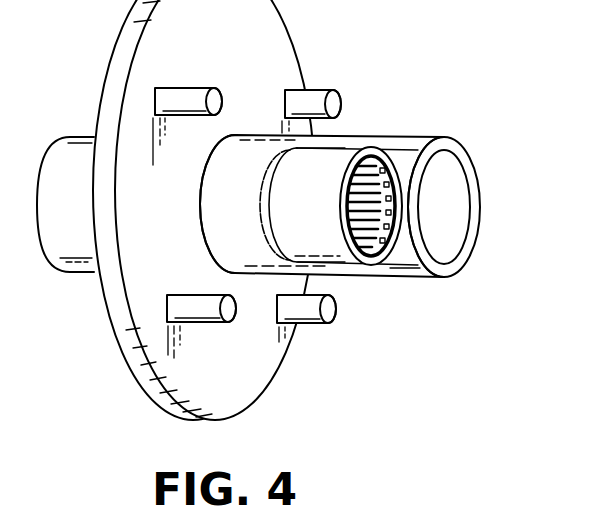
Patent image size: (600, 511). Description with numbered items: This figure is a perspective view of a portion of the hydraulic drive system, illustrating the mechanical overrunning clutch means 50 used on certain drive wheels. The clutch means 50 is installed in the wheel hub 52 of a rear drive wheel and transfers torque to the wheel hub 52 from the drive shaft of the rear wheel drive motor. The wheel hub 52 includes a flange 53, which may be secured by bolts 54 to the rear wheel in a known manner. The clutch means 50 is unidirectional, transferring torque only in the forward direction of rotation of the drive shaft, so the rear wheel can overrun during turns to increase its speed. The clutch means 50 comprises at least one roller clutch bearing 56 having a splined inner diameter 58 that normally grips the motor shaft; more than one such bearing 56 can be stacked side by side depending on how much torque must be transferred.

The overrunning clutch means 50 is at (331, 168).
The wheel hub 52 is at (413, 138).
The flange 53 is at (270, 55).
The bolts 54 is at (315, 95).
The roller clutch bearing 56 is at (330, 238).
The splined inner diameter 58 is at (386, 192).